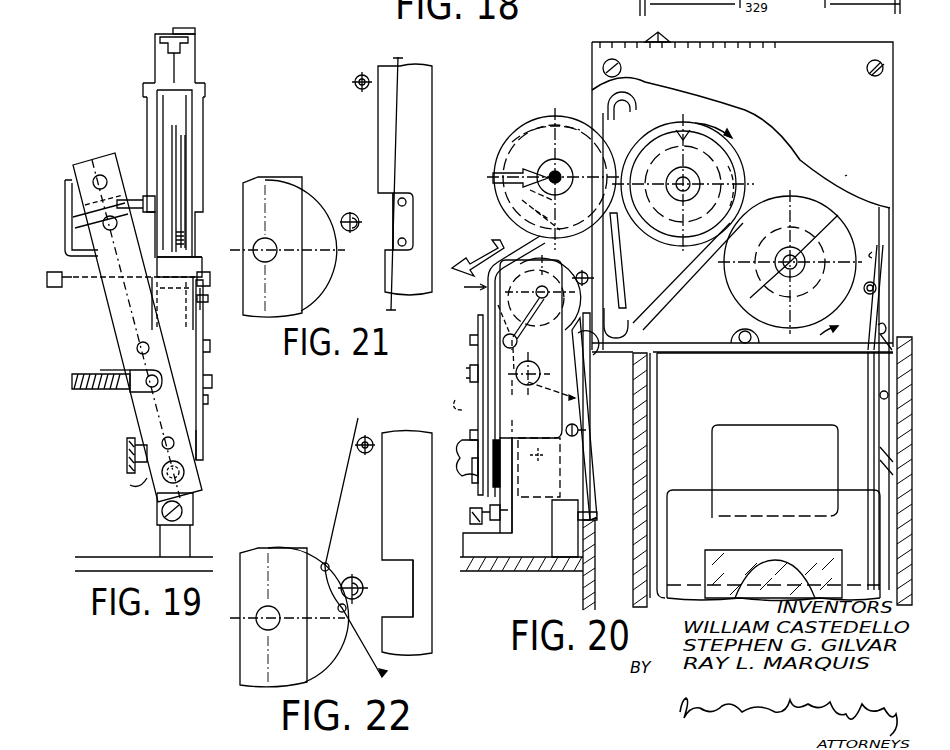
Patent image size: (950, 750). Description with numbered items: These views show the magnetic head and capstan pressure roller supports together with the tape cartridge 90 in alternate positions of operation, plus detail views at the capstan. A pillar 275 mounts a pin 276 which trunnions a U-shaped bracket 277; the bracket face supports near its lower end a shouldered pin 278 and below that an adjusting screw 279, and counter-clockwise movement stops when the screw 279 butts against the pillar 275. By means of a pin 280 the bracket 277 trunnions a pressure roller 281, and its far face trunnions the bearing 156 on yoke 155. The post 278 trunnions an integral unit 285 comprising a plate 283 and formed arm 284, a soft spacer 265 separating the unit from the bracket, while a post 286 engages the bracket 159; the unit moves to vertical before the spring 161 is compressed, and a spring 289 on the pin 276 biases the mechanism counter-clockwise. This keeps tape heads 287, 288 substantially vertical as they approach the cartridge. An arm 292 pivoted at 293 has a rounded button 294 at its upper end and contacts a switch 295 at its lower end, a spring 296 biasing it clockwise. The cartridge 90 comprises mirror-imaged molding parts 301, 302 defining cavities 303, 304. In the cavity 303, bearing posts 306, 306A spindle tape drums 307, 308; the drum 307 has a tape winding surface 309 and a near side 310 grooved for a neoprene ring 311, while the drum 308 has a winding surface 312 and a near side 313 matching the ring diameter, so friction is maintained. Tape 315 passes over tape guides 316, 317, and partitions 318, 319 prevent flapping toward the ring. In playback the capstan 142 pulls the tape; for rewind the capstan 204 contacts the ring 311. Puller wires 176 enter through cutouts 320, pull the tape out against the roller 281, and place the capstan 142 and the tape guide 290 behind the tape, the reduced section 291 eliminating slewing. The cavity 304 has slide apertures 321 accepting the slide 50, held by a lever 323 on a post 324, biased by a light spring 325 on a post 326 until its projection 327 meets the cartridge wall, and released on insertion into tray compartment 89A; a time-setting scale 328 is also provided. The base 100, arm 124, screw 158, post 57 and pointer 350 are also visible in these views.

In FIG. 20, the slide 50 is at (668, 500).
In FIG. 20, the support post 57 is at (585, 547).
In FIG. 20, the tray compartment 89A is at (648, 425).
In FIG. 19, the cartridge 90 is at (210, 97).
In FIG. 21, the cartridge 90 is at (433, 76).
In FIG. 22, the cartridge 90 is at (438, 640).
In FIG. 20, the cartridge 90 is at (582, 70).
In FIG. 19, the base 100 is at (128, 562).
In FIG. 20, the base 100 is at (530, 560).
In FIG. 19, the bracket arm 124 is at (81, 269).
In FIG. 19, the capstan 142 is at (90, 296).
In FIG. 21, the capstan 142 is at (345, 212).
In FIG. 22, the capstan 142 is at (365, 583).
In FIG. 20, the capstan 142 is at (590, 279).
In FIG. 19, the yoke 155 is at (126, 446).
In FIG. 20, the yoke 155 is at (462, 458).
In FIG. 19, the bearing 156 is at (118, 484).
In FIG. 20, the bearing 156 is at (490, 425).
In FIG. 19, the adjusting screw 158 is at (64, 392).
In FIG. 19, the bracket 159 is at (108, 420).
In FIG. 20, the bracket 159 is at (447, 396).
In FIG. 19, the spring 161 is at (120, 395).
In FIG. 21, the wires 176 is at (405, 243).
In FIG. 22, the wires 176 is at (375, 608).
In FIG. 20, the capstan 204 is at (510, 158).
In FIG. 20, the spacer 265 is at (522, 512).
In FIG. 19, the pillar 275 is at (185, 535).
In FIG. 20, the pillar 275 is at (478, 560).
In FIG. 19, the pin 276 is at (208, 400).
In FIG. 20, the pin 276 is at (552, 354).
In FIG. 19, the U-shaped bracket 277 is at (196, 448).
In FIG. 21, the U-shaped bracket 277 is at (268, 180).
In FIG. 22, the U-shaped bracket 277 is at (280, 552).
In FIG. 20, the U-shaped bracket 277 is at (531, 349).
In FIG. 19, the shouldered pin 278 is at (190, 463).
In FIG. 20, the shouldered pin 278 is at (488, 482).
In FIG. 19, the adjusting screw 279 is at (185, 505).
In FIG. 20, the adjusting screw 279 is at (470, 516).
In FIG. 19, the pin 280 is at (208, 305).
In FIG. 20, the pin 280 is at (498, 278).
In FIG. 19, the pressure roller 281 is at (186, 245).
In FIG. 21, the pressure roller 281 is at (312, 185).
In FIG. 22, the pressure roller 281 is at (315, 655).
In FIG. 20, the pressure roller 281 is at (580, 280).
In FIG. 20, the plate 283 is at (521, 352).
In FIG. 19, the formed arm 284 is at (84, 160).
In FIG. 20, the formed arm 284 is at (532, 250).
In FIG. 20, the integral unit 285 is at (465, 294).
In FIG. 19, the post 286 is at (222, 366).
In FIG. 20, the post 286 is at (466, 372).
In FIG. 20, the tape head 287 is at (560, 162).
In FIG. 20, the tape head 288 is at (527, 199).
In FIG. 20, the spring 289 is at (478, 333).
In FIG. 21, the tape guide 290 is at (354, 84).
In FIG. 22, the tape guide 290 is at (367, 432).
In FIG. 19, the reduced section 291 is at (122, 195).
In FIG. 20, the arm 292 is at (581, 458).
In FIG. 20, the pivot 293 is at (580, 430).
In FIG. 20, the rounded button 294 is at (596, 336).
In FIG. 20, the switch 295 is at (552, 540).
In FIG. 20, the spring 296 is at (566, 462).
In FIG. 19, the molding part 301 is at (155, 75).
In FIG. 19, the molding part 302 is at (190, 70).
In FIG. 20, the cavity 303 is at (800, 170).
In FIG. 20, the cavity 304 is at (710, 475).
In FIG. 20, the bearing post 306 is at (700, 184).
In FIG. 20, the bearing post 306A is at (799, 262).
In FIG. 20, the tape drum 307 is at (733, 118).
In FIG. 20, the tape drum 308 is at (830, 186).
In FIG. 20, the tape winding surface 309 is at (704, 116).
In FIG. 19, the near side 310 is at (186, 147).
In FIG. 20, the near side 310 is at (718, 150).
In FIG. 19, the neoprene ring 311 is at (178, 128).
In FIG. 20, the neoprene ring 311 is at (730, 170).
In FIG. 20, the tape winding surface 312 is at (728, 292).
In FIG. 20, the near side 313 is at (744, 316).
In FIG. 19, the tape 315 is at (174, 110).
In FIG. 21, the tape 315 is at (397, 140).
In FIG. 22, the tape 315 is at (355, 420).
In FIG. 20, the tape 315 is at (590, 120).
In FIG. 20, the tape guide 316 is at (622, 104).
In FIG. 20, the tape guide 317 is at (628, 338).
In FIG. 20, the partition 318 is at (698, 287).
In FIG. 20, the partition 319 is at (612, 300).
In FIG. 21, the cutouts 320 is at (380, 235).
In FIG. 22, the cutouts 320 is at (398, 560).
In FIG. 20, the cutouts 320 is at (604, 268).
In FIG. 20, the slide apertures 321 is at (720, 432).
In FIG. 20, the lever 323 is at (880, 440).
In FIG. 20, the post 324 is at (880, 395).
In FIG. 20, the light spring 325 is at (884, 258).
In FIG. 20, the post 326 is at (876, 289).
In FIG. 20, the projection 327 is at (878, 333).
In FIG. 20, the tape playback time-setting scale 328 is at (748, 58).
In FIG. 19, the pointer 350 is at (195, 30).
In FIG. 20, the pointer 350 is at (670, 36).